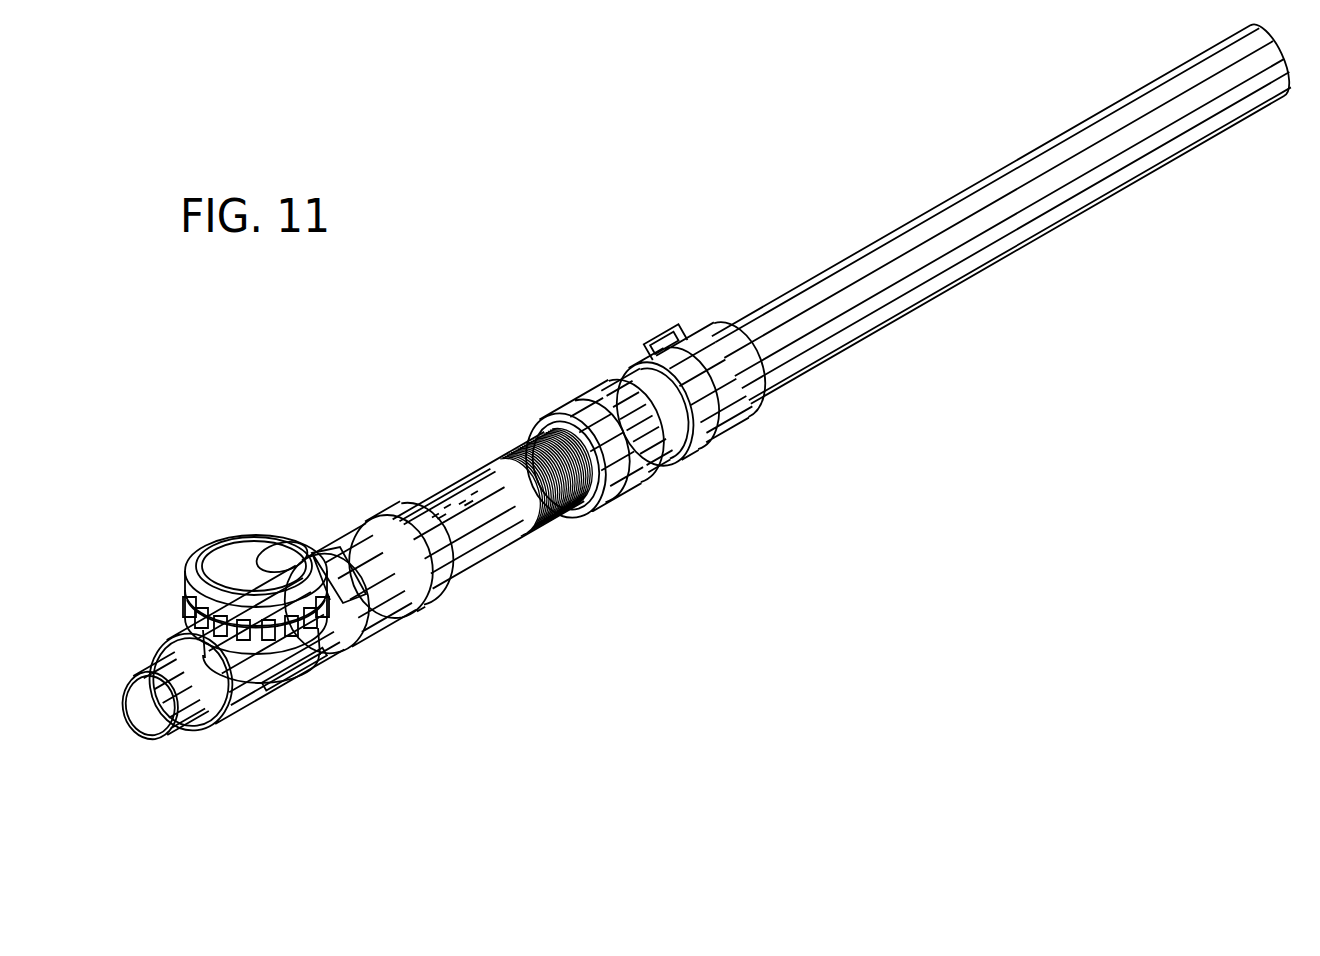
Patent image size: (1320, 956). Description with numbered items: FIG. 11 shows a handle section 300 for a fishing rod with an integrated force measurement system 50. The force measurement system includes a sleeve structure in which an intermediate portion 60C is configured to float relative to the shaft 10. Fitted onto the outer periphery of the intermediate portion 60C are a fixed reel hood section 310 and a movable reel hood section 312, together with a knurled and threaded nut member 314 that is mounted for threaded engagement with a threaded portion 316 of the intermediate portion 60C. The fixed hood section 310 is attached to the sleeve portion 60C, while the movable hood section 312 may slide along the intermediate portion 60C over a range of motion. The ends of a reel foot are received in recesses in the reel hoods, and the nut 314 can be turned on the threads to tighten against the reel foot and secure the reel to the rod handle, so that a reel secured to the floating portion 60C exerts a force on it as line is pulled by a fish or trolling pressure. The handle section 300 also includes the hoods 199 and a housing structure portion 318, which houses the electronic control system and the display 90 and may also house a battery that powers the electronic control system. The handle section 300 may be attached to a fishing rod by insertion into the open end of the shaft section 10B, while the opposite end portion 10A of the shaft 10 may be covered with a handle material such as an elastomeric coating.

The shaft 10 is at (855, 228).
The opposite end portion of the shaft 10A is at (1010, 160).
The shaft section 10B is at (186, 732).
The force measurement system 50 is at (494, 577).
The intermediate portion 60C is at (448, 488).
The display 90 is at (231, 552).
The hoods 199 is at (726, 440).
The handle section 300 is at (868, 493).
The fixed reel hood section 310 is at (357, 515).
The movable reel hood section 312 is at (566, 398).
The knurled and threaded nut member 314 is at (612, 380).
The threaded portion 316 is at (548, 513).
The housing structure portion 318 is at (186, 580).